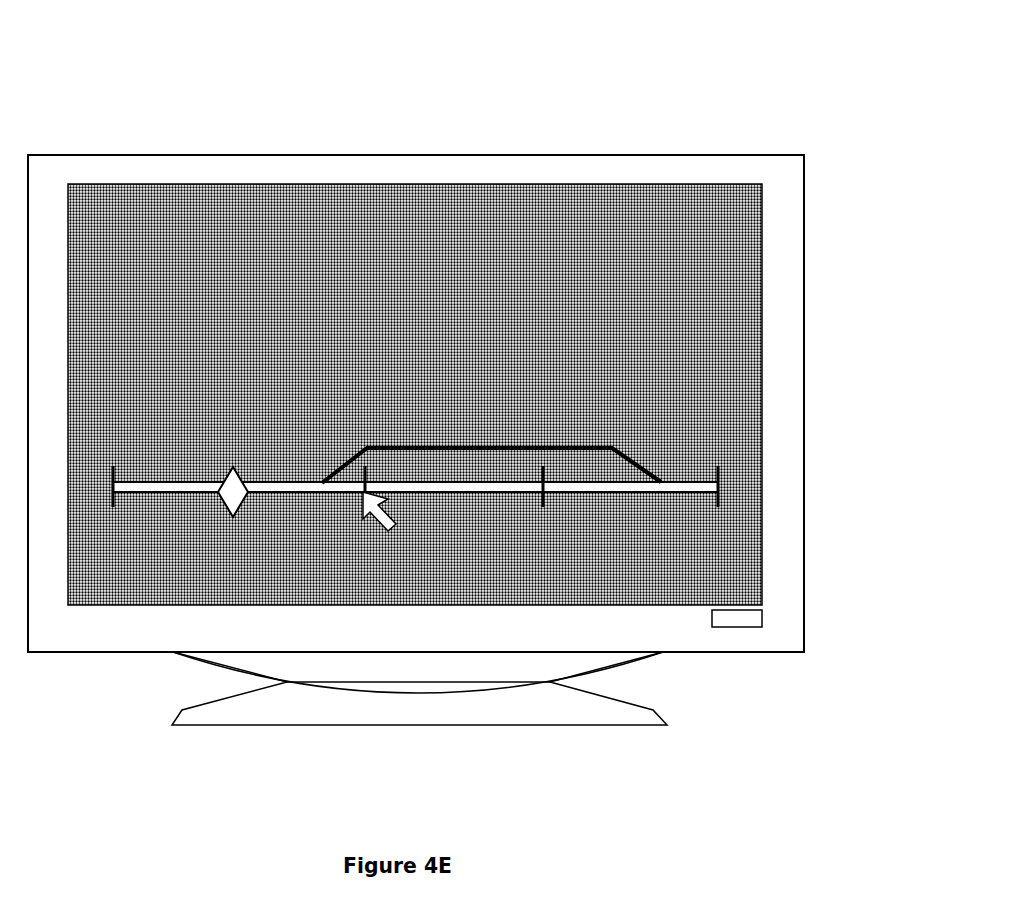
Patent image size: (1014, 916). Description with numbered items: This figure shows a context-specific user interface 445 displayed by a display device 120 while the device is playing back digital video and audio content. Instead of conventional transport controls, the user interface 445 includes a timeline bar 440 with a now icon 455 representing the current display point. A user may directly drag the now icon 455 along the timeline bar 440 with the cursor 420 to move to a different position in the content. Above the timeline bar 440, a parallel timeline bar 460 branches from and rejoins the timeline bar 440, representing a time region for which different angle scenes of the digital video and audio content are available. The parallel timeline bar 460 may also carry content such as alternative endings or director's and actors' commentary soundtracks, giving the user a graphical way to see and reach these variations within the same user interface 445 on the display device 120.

The display device 120 is at (213, 156).
The context-specific user interface 445 is at (428, 266).
The timeline bar 440 is at (694, 480).
The parallel timeline bar 460 is at (612, 446).
The now icon 455 is at (232, 467).
The cursor 420 is at (395, 515).